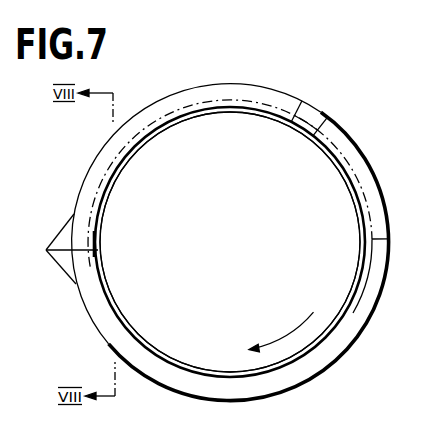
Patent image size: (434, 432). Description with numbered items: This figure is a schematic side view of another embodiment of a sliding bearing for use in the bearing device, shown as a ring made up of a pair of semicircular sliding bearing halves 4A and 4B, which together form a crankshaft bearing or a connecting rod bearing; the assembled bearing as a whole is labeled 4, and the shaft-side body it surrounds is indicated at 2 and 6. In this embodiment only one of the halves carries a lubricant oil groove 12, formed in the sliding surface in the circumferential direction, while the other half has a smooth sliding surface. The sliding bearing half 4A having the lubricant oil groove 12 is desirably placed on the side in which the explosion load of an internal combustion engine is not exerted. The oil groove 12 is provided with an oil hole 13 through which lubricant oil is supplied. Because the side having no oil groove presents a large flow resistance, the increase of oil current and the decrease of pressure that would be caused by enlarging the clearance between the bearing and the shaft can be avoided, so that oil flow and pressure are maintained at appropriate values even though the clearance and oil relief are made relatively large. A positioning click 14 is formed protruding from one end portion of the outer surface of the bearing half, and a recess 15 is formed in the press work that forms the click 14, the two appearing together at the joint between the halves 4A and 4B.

The piston 2 is at (285, 137).
The ring groove 6 is at (230, 242).
The piston ring 4 is at (164, 91).
The sliding bearing half 4A is at (265, 93).
The sliding bearing half 4B is at (343, 340).
The lubricant oil groove 12 is at (173, 108).
The oil hole 13 is at (328, 116).
The positioning click 14 is at (62, 249).
The recess 15 is at (90, 258).